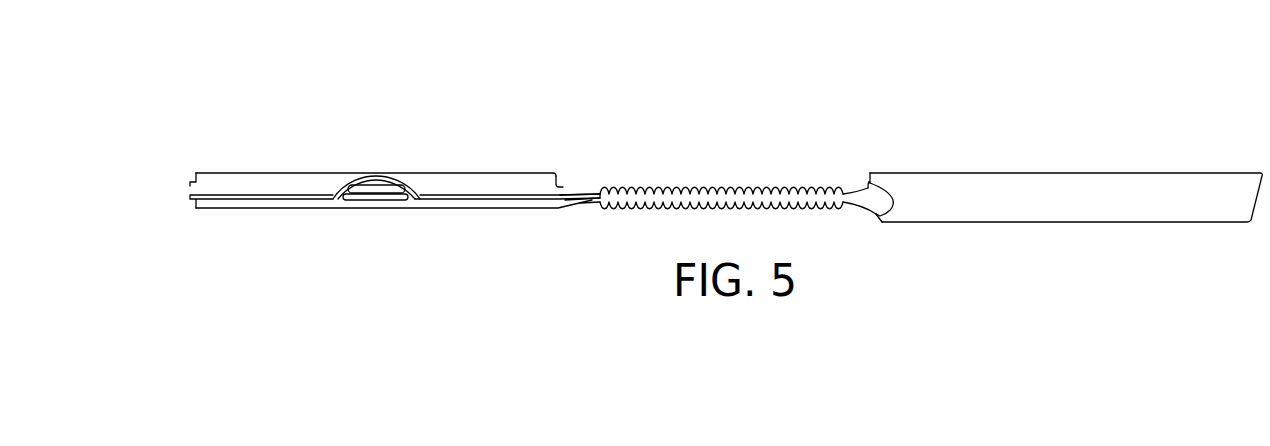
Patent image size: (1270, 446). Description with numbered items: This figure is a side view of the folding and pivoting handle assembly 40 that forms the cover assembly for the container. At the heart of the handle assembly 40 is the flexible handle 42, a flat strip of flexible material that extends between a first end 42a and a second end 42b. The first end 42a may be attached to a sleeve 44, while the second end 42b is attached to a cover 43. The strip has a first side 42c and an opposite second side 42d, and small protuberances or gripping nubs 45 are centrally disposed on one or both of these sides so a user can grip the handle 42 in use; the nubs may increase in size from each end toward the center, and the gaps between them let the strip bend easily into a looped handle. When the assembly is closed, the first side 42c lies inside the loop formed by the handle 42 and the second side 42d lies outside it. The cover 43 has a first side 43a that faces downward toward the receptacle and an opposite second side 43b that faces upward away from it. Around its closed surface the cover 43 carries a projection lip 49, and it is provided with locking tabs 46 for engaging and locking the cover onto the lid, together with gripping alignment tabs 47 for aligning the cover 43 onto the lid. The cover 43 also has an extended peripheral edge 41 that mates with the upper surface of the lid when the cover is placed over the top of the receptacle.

The handle assembly 40 is at (637, 77).
The extended peripheral edge 41 is at (200, 208).
The flexible handle 42 is at (628, 180).
The first end 42a is at (870, 216).
The second end 42b is at (585, 212).
The first side 42c is at (694, 182).
The second side 42d is at (718, 212).
The cover 43 is at (232, 172).
The first side of cover 43a is at (340, 177).
The second side of cover 43b is at (358, 210).
The sleeve 44 is at (937, 174).
The gripping nubs 45 is at (787, 181).
The locking tabs 46 is at (184, 178).
The gripping alignment tabs 47 is at (370, 178).
The projection lip 49 is at (559, 175).